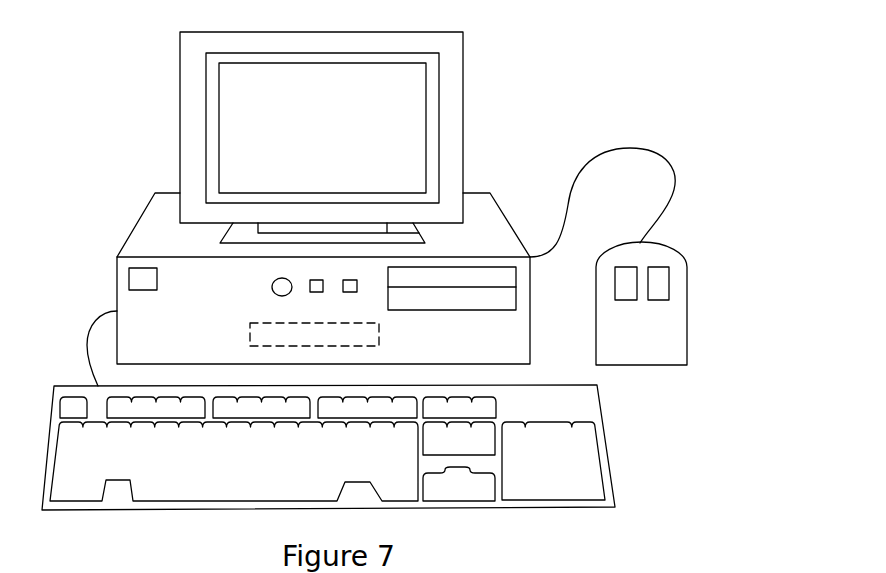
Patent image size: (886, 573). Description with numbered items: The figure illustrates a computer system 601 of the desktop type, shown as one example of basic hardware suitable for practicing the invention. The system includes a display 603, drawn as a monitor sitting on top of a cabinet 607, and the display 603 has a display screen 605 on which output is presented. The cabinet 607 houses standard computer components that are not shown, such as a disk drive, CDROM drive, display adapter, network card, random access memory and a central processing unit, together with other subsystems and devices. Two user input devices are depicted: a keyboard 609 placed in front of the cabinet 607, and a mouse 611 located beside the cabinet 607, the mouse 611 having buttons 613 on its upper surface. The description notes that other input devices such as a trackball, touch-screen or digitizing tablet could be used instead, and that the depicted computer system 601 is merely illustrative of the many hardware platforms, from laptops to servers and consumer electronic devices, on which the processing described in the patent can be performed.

The computer system 601 is at (626, 78).
The display 603 is at (465, 128).
The display screen 605 is at (403, 120).
The cabinet 607 is at (483, 231).
The keyboard 609 is at (186, 510).
The mouse 611 is at (670, 330).
The buttons 613 is at (660, 267).